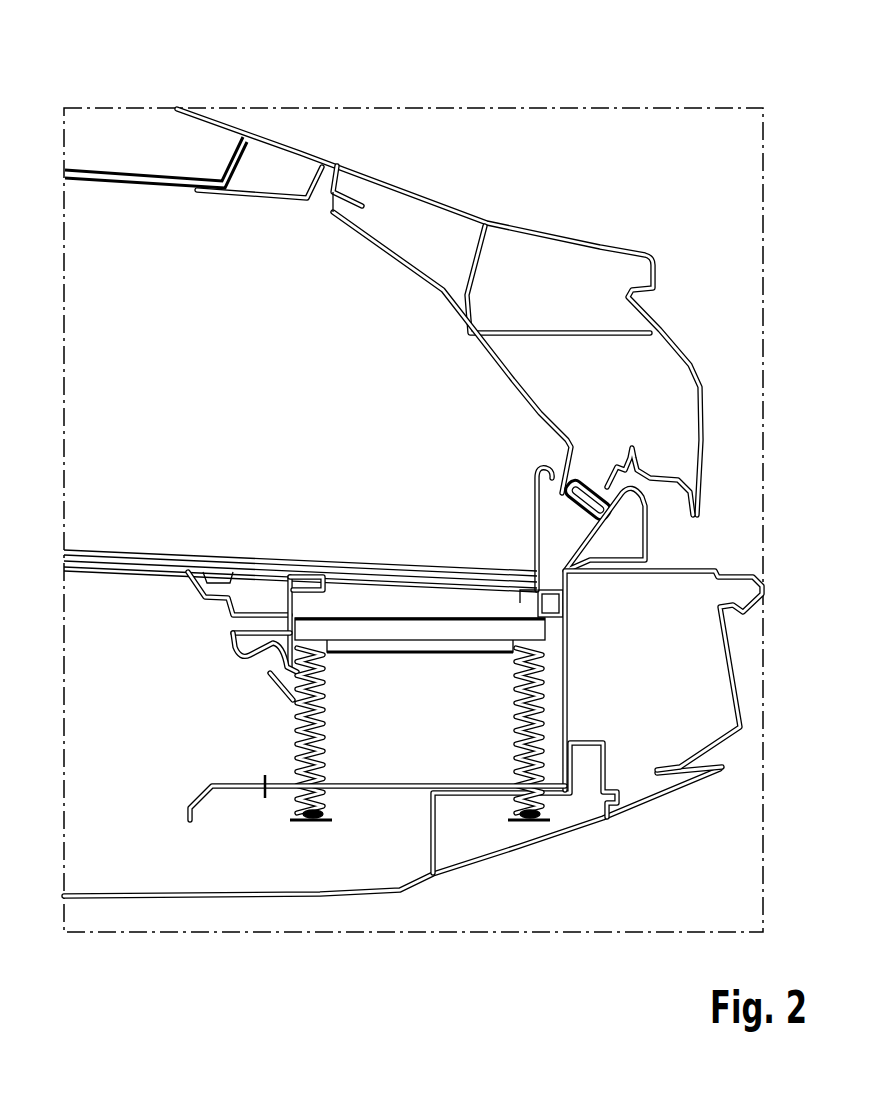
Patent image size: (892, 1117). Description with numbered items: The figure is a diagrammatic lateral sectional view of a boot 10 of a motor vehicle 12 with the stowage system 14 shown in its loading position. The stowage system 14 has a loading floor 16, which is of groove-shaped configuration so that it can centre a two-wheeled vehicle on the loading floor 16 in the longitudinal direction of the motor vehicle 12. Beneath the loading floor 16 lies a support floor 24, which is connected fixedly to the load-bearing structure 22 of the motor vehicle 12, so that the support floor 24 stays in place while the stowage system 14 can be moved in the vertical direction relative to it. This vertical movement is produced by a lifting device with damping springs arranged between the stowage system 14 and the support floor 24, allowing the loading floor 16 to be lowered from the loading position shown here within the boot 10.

The boot 10 is at (320, 484).
The motor vehicle 12 is at (647, 89).
The stowage system 14 is at (421, 592).
The loading floor 16 is at (350, 617).
The load-bearing structure 22 is at (257, 610).
The support floor 24 is at (406, 785).